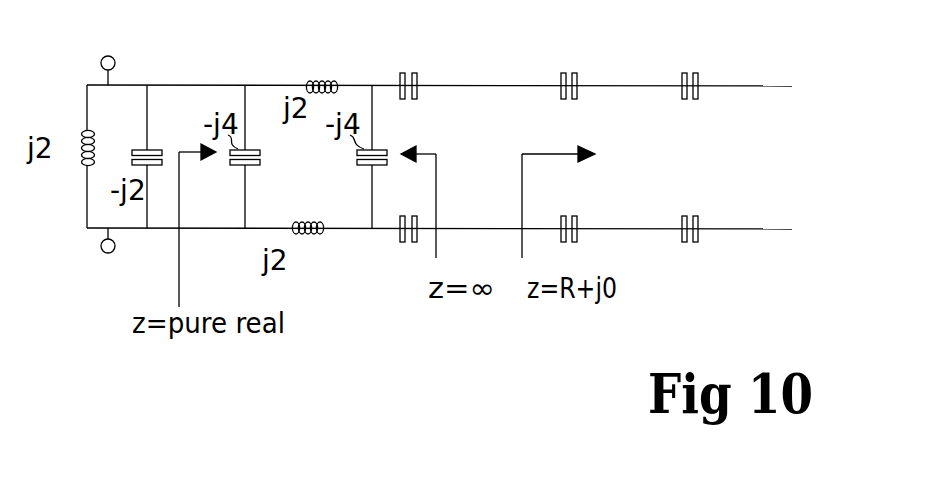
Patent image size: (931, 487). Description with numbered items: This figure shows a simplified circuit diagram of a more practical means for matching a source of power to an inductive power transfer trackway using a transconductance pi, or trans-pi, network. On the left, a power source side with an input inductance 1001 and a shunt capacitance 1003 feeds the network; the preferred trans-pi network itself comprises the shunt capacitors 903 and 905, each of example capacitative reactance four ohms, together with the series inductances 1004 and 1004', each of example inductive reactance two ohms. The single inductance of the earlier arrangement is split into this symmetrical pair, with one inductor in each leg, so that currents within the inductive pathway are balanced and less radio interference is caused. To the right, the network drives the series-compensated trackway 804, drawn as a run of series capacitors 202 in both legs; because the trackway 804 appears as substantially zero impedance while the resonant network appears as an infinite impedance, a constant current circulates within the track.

The shunt inductor 1001 is at (80, 137).
The shunt capacitor 1003 is at (138, 149).
The capacitor 903 is at (260, 162).
The capacitor 905 is at (357, 162).
The inductance 1004 is at (328, 54).
The inductance 1004' is at (337, 283).
The series capacitors 202 is at (420, 73).
The series-compensated trackway 804 is at (790, 73).